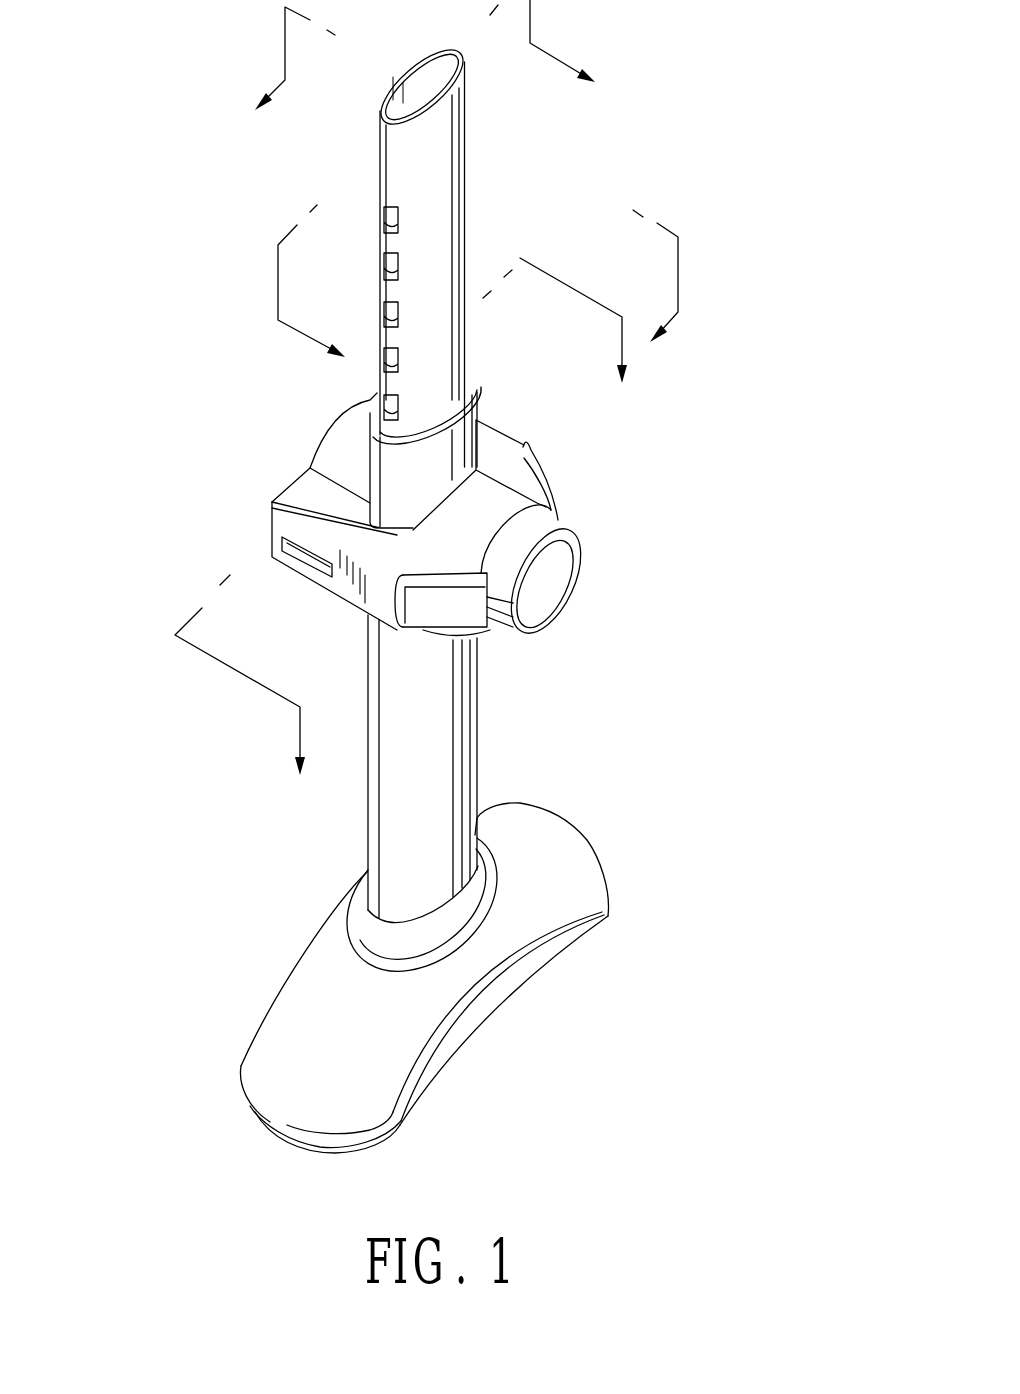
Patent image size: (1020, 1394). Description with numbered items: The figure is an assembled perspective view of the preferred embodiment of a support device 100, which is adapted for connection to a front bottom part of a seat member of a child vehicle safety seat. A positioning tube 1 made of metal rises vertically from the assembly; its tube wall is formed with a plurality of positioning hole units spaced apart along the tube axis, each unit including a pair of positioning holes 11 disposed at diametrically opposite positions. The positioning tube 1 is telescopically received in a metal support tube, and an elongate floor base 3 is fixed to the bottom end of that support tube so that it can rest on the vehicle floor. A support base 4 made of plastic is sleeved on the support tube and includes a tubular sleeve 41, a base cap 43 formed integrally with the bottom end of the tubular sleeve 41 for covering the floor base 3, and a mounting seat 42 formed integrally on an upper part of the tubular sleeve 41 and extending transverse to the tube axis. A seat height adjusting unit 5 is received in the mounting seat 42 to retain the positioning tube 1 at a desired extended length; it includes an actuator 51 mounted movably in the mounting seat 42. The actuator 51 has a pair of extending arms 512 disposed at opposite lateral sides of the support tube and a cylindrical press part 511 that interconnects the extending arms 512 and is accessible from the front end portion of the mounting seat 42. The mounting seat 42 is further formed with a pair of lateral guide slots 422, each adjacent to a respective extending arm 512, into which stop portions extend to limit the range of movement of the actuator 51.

The support device 100 is at (440, 576).
The positioning tube 1 is at (437, 282).
The positioning holes 11 is at (385, 215).
The floor base 3 is at (503, 983).
The support base 4 is at (450, 663).
The tubular sleeve 41 is at (462, 708).
The mounting seat 42 is at (405, 506).
The lateral guide slots 422 is at (303, 560).
The base cap 43 is at (577, 847).
The seat height adjusting unit 5 is at (550, 542).
The actuator 51 is at (564, 575).
The cylindrical press part 511 is at (537, 613).
The extending arms 512 is at (455, 617).